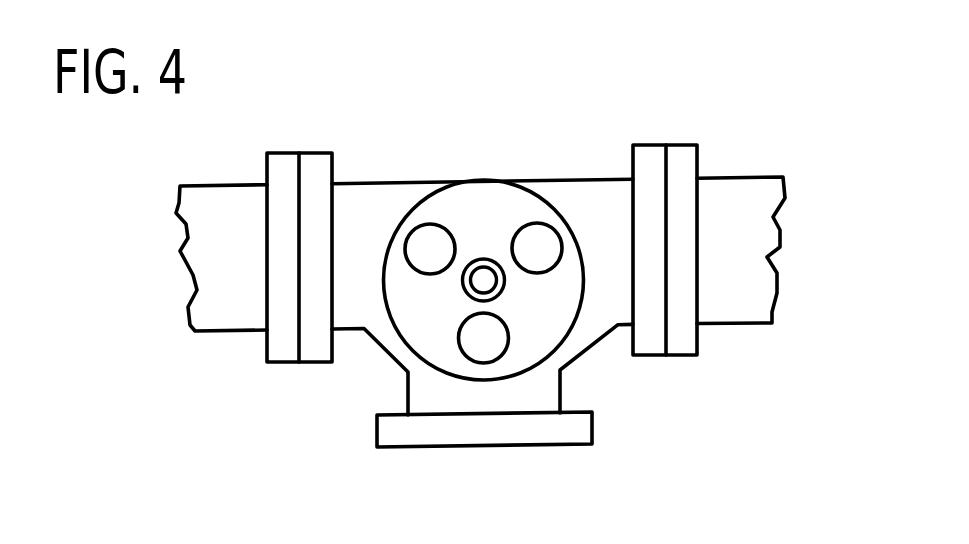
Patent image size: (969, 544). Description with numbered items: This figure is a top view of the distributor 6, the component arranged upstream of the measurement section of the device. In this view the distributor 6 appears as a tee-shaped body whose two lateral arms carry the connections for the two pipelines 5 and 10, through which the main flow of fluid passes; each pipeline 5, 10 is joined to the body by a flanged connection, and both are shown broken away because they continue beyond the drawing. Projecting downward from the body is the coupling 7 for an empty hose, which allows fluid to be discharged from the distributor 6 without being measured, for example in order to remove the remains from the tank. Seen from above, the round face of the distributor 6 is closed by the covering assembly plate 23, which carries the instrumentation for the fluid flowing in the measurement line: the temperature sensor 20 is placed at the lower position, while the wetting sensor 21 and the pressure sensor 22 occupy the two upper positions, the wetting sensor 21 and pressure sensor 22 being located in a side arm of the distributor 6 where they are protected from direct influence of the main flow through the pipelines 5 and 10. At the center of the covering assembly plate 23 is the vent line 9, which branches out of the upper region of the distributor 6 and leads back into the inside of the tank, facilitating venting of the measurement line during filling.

The pipeline 5 is at (196, 263).
The pipeline 10 is at (763, 257).
The distributor 6 is at (716, 96).
The coupling 7 is at (555, 435).
The vent line 9 is at (483, 278).
The temperature sensor 20 is at (485, 350).
The wetting sensor 21 is at (537, 244).
The pressure sensor 22 is at (428, 240).
The covering assembly plate 23 is at (555, 318).